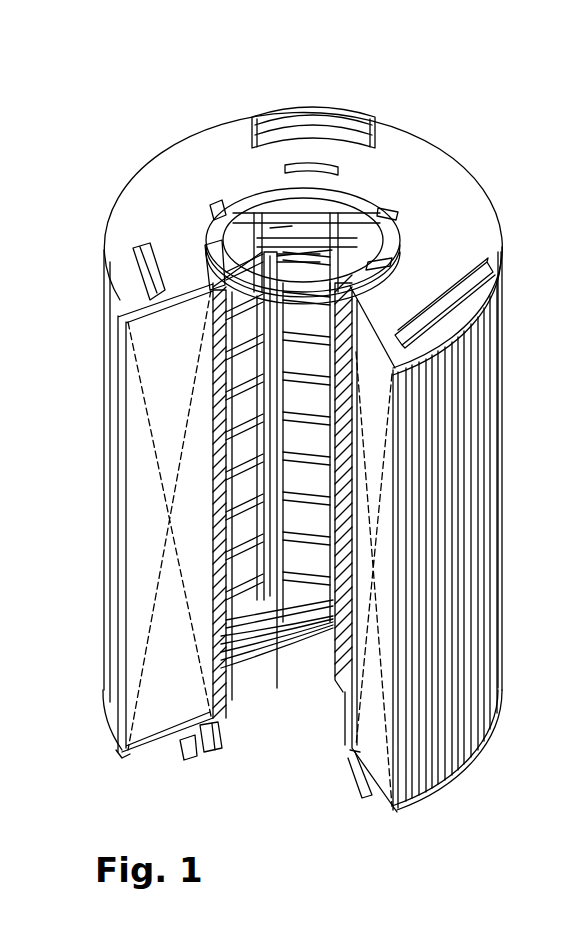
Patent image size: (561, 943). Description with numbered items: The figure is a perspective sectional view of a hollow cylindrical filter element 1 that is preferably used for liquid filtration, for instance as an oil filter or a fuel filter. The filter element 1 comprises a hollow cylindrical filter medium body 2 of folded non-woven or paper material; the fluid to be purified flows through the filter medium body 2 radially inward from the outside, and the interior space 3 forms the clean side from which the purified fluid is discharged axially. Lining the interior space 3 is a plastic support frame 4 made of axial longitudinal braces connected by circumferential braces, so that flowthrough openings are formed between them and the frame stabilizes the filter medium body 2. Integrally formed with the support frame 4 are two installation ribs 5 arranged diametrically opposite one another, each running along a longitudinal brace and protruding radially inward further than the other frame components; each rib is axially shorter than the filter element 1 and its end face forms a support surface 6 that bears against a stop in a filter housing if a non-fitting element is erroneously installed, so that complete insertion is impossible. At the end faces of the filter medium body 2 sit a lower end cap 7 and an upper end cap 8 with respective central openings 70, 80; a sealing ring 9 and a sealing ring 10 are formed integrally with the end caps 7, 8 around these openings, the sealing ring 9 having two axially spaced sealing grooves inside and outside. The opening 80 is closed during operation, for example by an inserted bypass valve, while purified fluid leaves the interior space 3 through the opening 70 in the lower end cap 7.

The filter element 1 is at (113, 118).
The filter medium body 2 is at (135, 410).
The interior space 3 is at (353, 223).
The support frame 4 is at (281, 228).
The installation ribs 5 is at (338, 521).
The support surface 6 is at (333, 677).
The end cap 7 is at (143, 750).
The end cap 8 is at (133, 188).
The sealing ring 9 is at (206, 742).
The sealing ring 10 is at (392, 233).
The central opening 70 is at (343, 743).
The central opening 80 is at (292, 195).